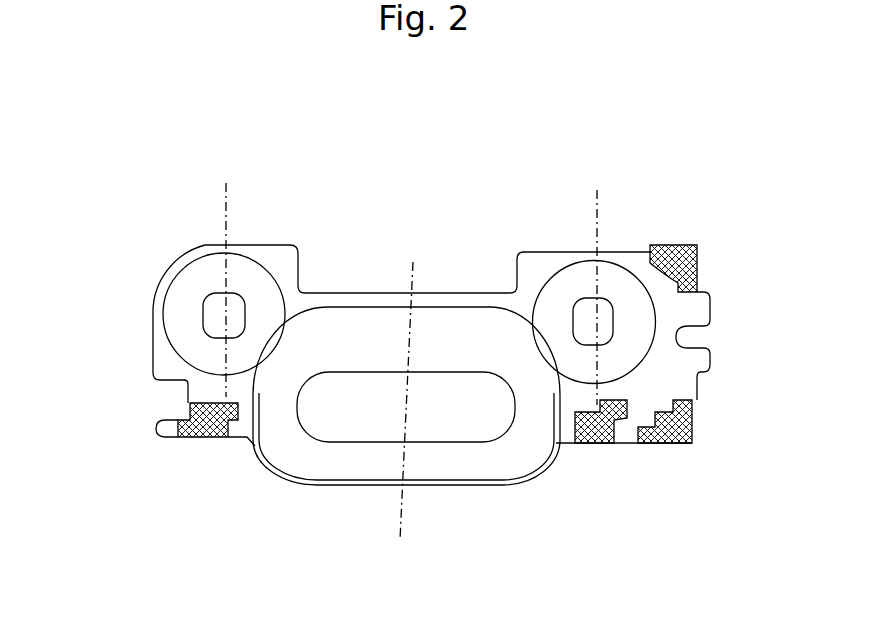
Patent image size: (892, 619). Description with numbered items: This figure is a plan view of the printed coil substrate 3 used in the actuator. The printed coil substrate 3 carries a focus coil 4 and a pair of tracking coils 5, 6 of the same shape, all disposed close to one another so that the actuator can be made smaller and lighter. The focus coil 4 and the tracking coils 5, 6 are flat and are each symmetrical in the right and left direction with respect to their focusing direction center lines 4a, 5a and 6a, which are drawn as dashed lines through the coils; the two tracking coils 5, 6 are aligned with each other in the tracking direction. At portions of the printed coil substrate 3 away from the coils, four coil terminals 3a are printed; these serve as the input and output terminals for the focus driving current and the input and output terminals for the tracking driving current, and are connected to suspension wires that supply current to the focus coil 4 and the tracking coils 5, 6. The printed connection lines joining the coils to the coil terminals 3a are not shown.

The printed coil substrate 3 is at (349, 194).
The coil terminals 3a is at (697, 250).
The focus coil 4 is at (517, 465).
The focusing direction center line 4a is at (400, 522).
The tracking coil 5 is at (172, 316).
The focusing direction center line 5a is at (229, 195).
The tracking coil 6 is at (647, 327).
The focusing direction center line 6a is at (601, 193).